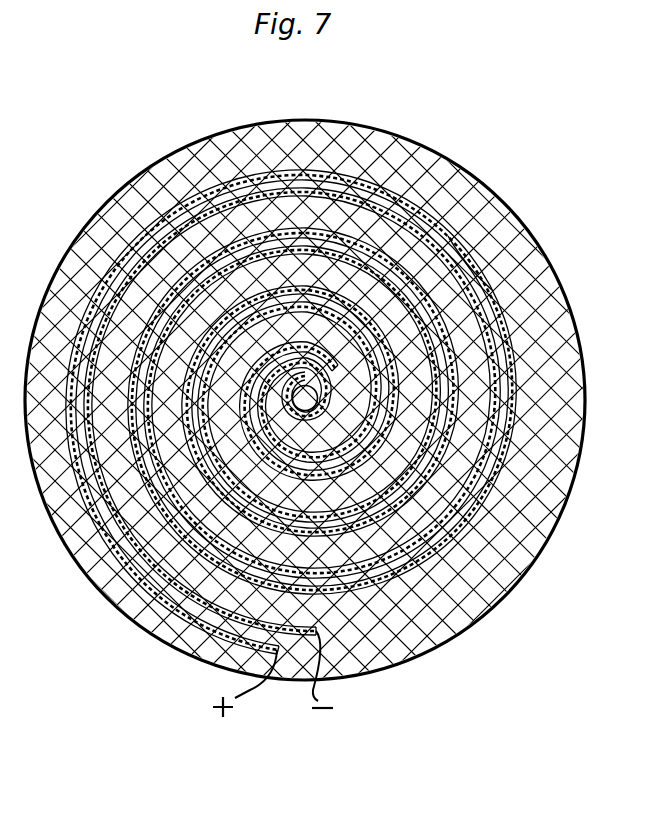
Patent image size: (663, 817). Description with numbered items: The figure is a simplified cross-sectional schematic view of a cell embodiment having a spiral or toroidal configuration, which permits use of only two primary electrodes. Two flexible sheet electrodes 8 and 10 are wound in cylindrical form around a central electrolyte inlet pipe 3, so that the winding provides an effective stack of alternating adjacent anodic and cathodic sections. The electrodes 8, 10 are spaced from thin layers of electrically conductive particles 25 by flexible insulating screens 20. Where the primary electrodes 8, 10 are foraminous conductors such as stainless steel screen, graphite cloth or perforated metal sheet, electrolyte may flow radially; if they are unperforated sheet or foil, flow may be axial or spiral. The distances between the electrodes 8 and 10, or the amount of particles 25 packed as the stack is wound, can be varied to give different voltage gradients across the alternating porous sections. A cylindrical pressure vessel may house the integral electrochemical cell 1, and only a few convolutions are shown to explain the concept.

The integral electrochemical cell 1 is at (556, 268).
The central electrolyte inlet pipe 3 is at (321, 428).
The sheet electrode 8 is at (402, 192).
The sheet electrode 10 is at (255, 192).
The flexible insulating screen 20 is at (470, 242).
The electrically conductive particles 25 is at (350, 560).